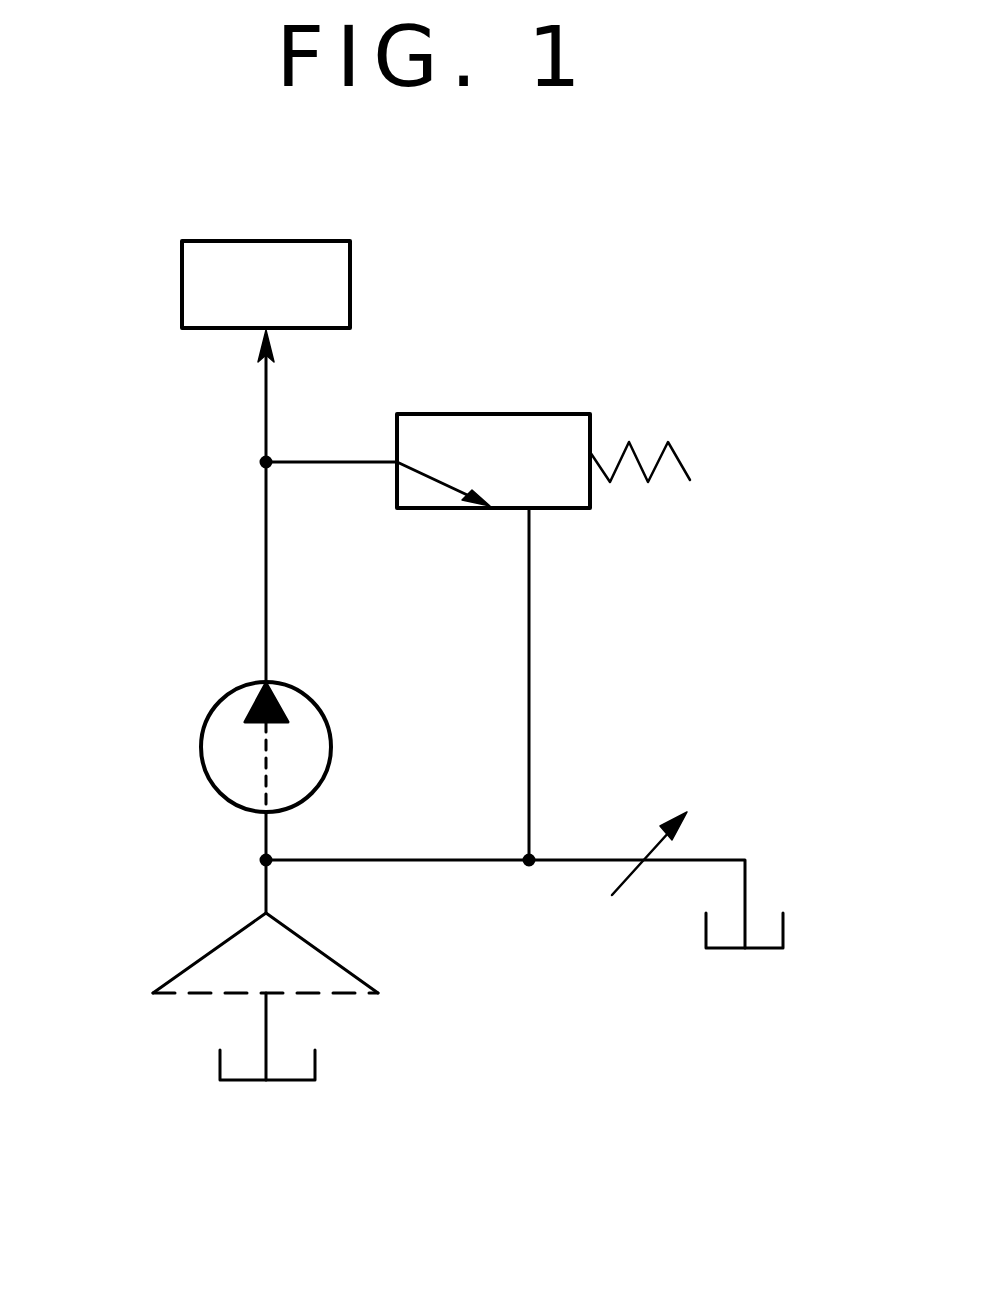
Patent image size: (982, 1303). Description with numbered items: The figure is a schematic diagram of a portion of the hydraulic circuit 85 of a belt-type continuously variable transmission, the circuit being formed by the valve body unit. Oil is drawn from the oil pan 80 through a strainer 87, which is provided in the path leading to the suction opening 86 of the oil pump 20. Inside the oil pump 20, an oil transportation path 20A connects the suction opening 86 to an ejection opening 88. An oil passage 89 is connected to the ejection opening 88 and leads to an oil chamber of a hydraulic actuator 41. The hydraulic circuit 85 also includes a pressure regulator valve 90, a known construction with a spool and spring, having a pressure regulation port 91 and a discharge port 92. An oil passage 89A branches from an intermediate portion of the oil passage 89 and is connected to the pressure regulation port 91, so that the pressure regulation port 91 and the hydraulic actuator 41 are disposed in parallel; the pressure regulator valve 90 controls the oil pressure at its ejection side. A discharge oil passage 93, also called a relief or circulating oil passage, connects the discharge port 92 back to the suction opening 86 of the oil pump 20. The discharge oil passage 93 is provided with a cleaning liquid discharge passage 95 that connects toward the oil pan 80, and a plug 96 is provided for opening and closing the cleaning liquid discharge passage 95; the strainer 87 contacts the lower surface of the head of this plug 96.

The hydraulic circuit 85 is at (205, 568).
The hydraulic actuator 41 is at (328, 268).
The oil passage 89 is at (267, 590).
The oil passage 89A is at (325, 465).
The pressure regulator valve 90 is at (543, 435).
The pressure regulation port 91 is at (397, 462).
The discharge port 92 is at (530, 510).
The oil pump 20 is at (213, 728).
The ejection opening 88 is at (268, 684).
The oil transportation path 20A is at (266, 762).
The suction opening 86 is at (266, 814).
The discharge oil passage 93 is at (400, 860).
The cleaning liquid discharge passage 95 is at (718, 860).
The plug 96 is at (642, 870).
The strainer 87 is at (215, 948).
The oil pan 80 is at (287, 1080).